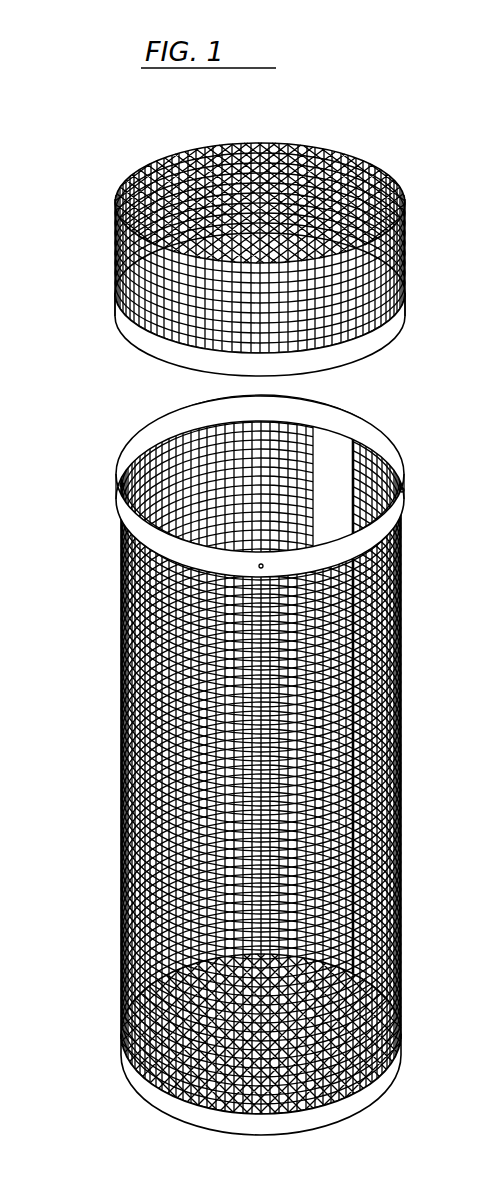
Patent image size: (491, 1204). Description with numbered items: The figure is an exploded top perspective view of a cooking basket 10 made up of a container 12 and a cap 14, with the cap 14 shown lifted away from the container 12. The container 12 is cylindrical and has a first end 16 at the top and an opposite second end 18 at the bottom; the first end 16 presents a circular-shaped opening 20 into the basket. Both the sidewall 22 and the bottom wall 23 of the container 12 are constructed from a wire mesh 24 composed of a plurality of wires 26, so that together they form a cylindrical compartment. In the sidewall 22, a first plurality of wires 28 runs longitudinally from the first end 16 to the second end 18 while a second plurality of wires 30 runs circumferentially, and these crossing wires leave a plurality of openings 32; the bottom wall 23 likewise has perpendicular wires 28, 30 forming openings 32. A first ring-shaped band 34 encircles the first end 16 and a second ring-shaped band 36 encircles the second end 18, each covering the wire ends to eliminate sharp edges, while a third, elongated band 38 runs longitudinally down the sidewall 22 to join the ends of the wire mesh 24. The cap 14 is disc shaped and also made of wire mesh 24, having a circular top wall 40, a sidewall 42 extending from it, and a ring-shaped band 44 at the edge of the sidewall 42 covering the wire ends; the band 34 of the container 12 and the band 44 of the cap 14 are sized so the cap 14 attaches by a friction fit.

The cooking basket 10 is at (96, 358).
The container 12 is at (393, 690).
The cap 14 is at (372, 182).
The first end 16 is at (375, 420).
The second end 18 is at (372, 1083).
The circular-shaped opening 20 is at (320, 450).
The sidewall 22 is at (388, 745).
The bottom wall 23 is at (237, 1080).
The wire mesh 24 is at (365, 605).
The wires 26 is at (348, 690).
The first plurality of wires 28 is at (333, 808).
The second plurality of wires 30 is at (342, 855).
The openings 32 is at (117, 953).
The first ring-shaped band 34 is at (155, 529).
The second ring-shaped band 36 is at (320, 1104).
The third elongated band 38 is at (323, 502).
The top wall 40 is at (258, 140).
The sidewall 42 is at (396, 288).
The ring-shaped band 44 is at (127, 312).